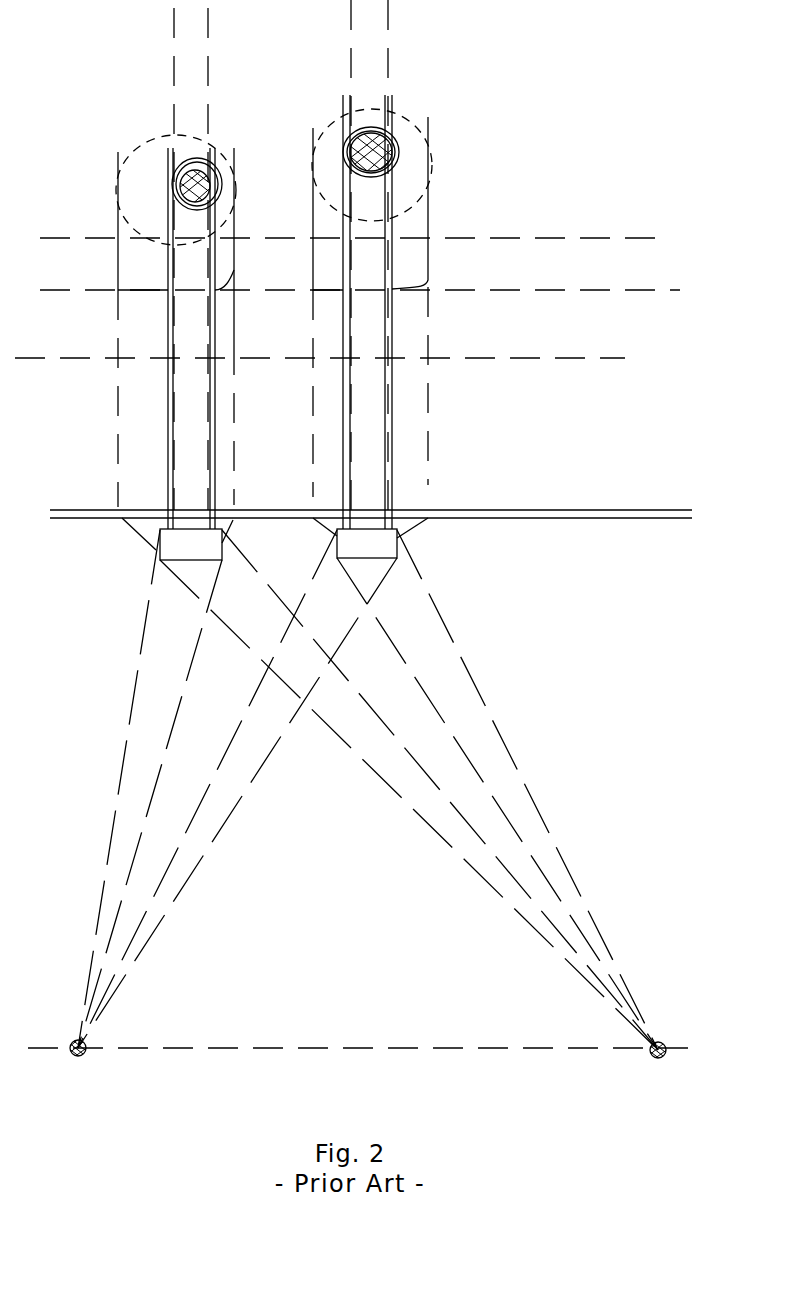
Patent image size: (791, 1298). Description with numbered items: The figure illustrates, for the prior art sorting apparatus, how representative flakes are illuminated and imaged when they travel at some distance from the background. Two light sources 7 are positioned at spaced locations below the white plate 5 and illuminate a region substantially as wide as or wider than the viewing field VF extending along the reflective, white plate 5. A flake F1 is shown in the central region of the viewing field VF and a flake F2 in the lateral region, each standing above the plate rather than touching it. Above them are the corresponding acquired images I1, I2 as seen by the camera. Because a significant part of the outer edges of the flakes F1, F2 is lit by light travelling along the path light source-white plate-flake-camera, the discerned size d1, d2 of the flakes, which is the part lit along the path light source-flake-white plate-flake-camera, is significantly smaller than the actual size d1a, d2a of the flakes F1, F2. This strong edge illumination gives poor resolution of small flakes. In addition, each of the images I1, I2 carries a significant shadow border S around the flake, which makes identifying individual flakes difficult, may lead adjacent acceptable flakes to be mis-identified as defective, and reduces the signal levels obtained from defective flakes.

The white plate 5 is at (377, 521).
The viewing field VF is at (630, 518).
The image of flake F1 I1 is at (397, 316).
The image of flake F2 I2 is at (163, 330).
The shadow border S is at (140, 160).
The flake at central region F1 is at (400, 544).
The flake at lateral region F2 is at (162, 547).
The discerned size of flake F1 d1 is at (430, 25).
The discerned size of flake F2 d2 is at (247, 27).
The actual size of flake F1 d1a is at (445, 489).
The actual size of flake F2 d2a is at (125, 490).
The light sources 7 is at (70, 1057).